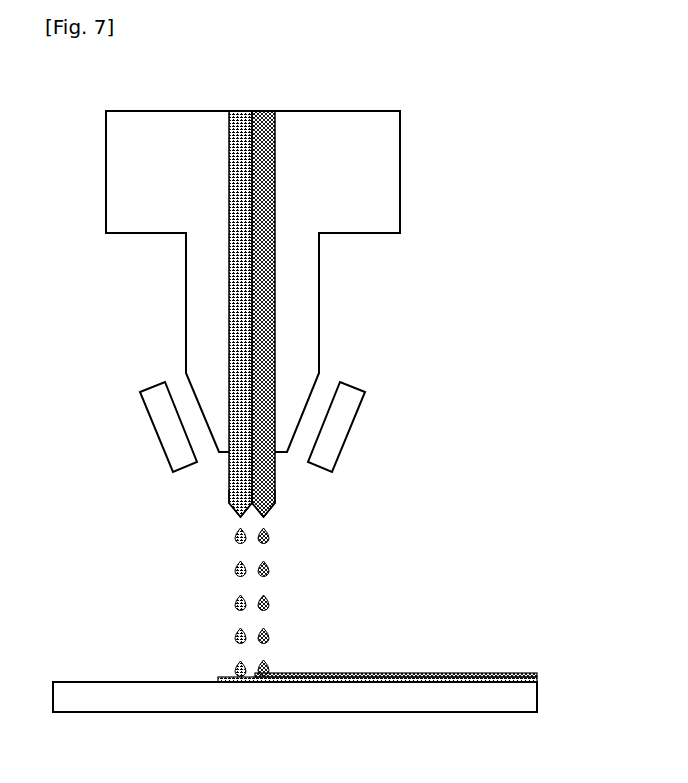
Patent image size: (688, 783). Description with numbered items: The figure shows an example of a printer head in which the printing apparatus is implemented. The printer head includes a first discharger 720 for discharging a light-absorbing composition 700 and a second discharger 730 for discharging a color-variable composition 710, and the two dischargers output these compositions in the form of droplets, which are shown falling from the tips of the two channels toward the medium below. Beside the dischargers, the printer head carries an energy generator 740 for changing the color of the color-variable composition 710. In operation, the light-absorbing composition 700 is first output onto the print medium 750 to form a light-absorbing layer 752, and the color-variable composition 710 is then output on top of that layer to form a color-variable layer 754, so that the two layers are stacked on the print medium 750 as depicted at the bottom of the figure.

The light-absorbing composition 700 is at (230, 127).
The color-variable composition 710 is at (275, 127).
The first discharger 720 is at (230, 503).
The second discharger 730 is at (277, 503).
The energy generator 740 is at (343, 430).
The print medium 750 is at (533, 700).
The light-absorbing layer 752 is at (537, 680).
The color-variable layer 754 is at (537, 673).